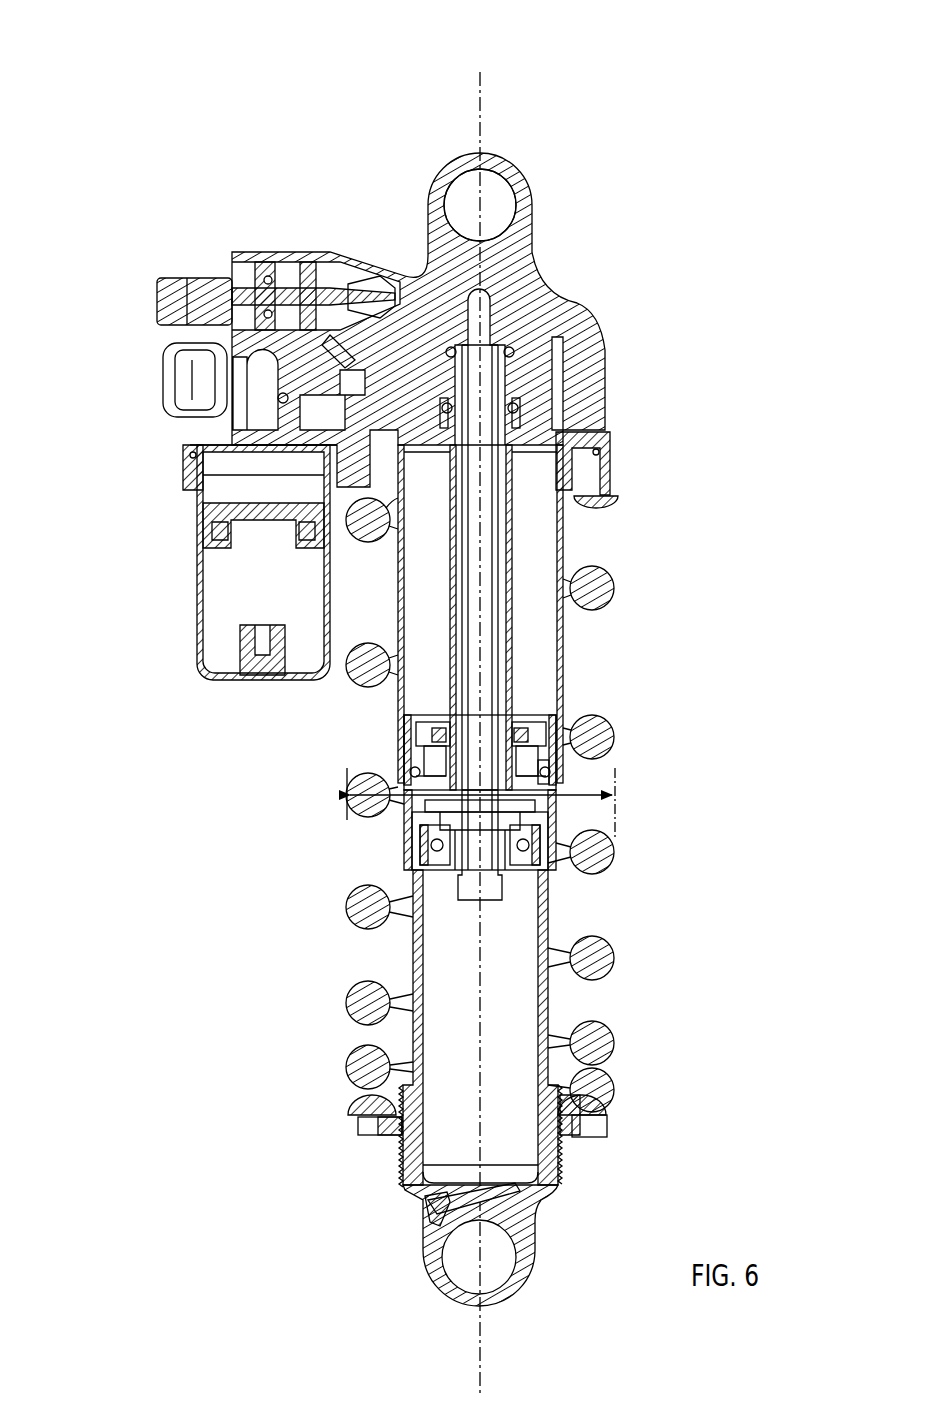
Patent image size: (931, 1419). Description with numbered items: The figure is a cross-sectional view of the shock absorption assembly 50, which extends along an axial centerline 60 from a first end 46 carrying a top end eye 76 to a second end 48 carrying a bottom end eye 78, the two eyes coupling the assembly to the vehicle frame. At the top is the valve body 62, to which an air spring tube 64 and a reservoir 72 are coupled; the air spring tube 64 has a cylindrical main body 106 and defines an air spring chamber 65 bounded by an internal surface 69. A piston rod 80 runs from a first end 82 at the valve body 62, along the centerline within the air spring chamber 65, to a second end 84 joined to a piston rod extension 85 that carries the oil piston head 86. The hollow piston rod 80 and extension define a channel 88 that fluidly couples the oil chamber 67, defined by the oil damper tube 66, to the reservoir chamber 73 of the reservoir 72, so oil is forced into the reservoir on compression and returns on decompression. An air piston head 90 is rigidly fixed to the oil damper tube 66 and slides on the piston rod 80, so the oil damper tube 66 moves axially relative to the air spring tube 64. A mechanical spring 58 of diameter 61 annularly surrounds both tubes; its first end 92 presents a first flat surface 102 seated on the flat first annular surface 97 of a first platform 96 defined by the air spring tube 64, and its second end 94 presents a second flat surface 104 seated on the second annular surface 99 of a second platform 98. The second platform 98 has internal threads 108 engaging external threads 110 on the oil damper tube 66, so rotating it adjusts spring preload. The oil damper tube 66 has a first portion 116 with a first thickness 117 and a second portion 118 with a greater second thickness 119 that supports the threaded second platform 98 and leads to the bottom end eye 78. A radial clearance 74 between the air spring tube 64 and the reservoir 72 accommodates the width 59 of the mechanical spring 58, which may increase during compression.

The first end 46 is at (547, 135).
The second end 48 is at (520, 1302).
The shock absorption assembly 50 is at (345, 80).
The mechanical spring 58 is at (352, 906).
The width 59 is at (410, 782).
The axial centerline 60 is at (478, 108).
The diameter 61 is at (570, 592).
The valve body 62 is at (588, 335).
The air spring tube 64 is at (565, 652).
The air spring chamber 65 is at (548, 569).
The oil damper tube 66 is at (548, 926).
The oil chamber 67 is at (472, 1016).
The internal surface 69 is at (552, 692).
The reservoir 72 is at (200, 598).
The reservoir chamber 73 is at (282, 613).
The radial clearance 74 is at (396, 589).
The top end eye 76 is at (525, 200).
The bottom end eye 78 is at (528, 1262).
The piston rod 80 is at (452, 680).
The first end 82 is at (512, 415).
The second end 84 is at (422, 812).
The piston rod extension 85 is at (470, 882).
The oil piston head 86 is at (558, 846).
The channel 88 is at (484, 626).
The air piston head 90 is at (552, 772).
The first end 92 is at (597, 506).
The second end 94 is at (366, 1100).
The first platform 96 is at (232, 472).
The first annular surface 97 is at (300, 560).
The second platform 98 is at (588, 1126).
The second annular surface 99 is at (590, 1108).
The first flat surface 102 is at (600, 490).
The second flat surface 104 is at (380, 1134).
The cylindrical main body 106 is at (560, 732).
The internal threads 108 is at (414, 1116).
The external threads 110 is at (402, 1138).
The first portion 116 is at (548, 996).
The first thickness 117 is at (448, 963).
The second portion 118 is at (538, 1110).
The second thickness 119 is at (510, 1153).